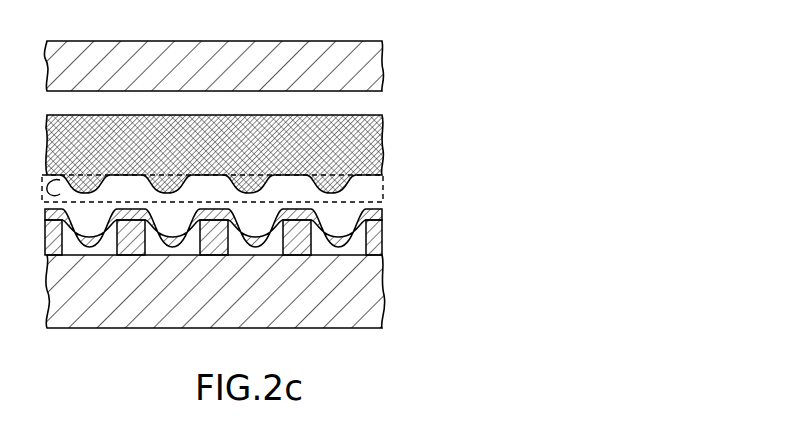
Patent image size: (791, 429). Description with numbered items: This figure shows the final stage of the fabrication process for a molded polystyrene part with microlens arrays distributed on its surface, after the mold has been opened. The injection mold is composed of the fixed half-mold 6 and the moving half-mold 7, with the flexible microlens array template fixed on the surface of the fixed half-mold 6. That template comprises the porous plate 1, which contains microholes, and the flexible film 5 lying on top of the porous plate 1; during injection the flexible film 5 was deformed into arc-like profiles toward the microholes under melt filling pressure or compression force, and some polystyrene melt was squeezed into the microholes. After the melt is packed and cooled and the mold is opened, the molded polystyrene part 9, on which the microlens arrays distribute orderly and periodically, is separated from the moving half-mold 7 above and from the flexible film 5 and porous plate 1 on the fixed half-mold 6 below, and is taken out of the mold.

The moving half-mold 7 is at (357, 67).
The molded polystyrene part 9 is at (360, 145).
The flexible film 5 is at (375, 218).
The porous plate 1 is at (372, 250).
The fixed half-mold 6 is at (355, 295).